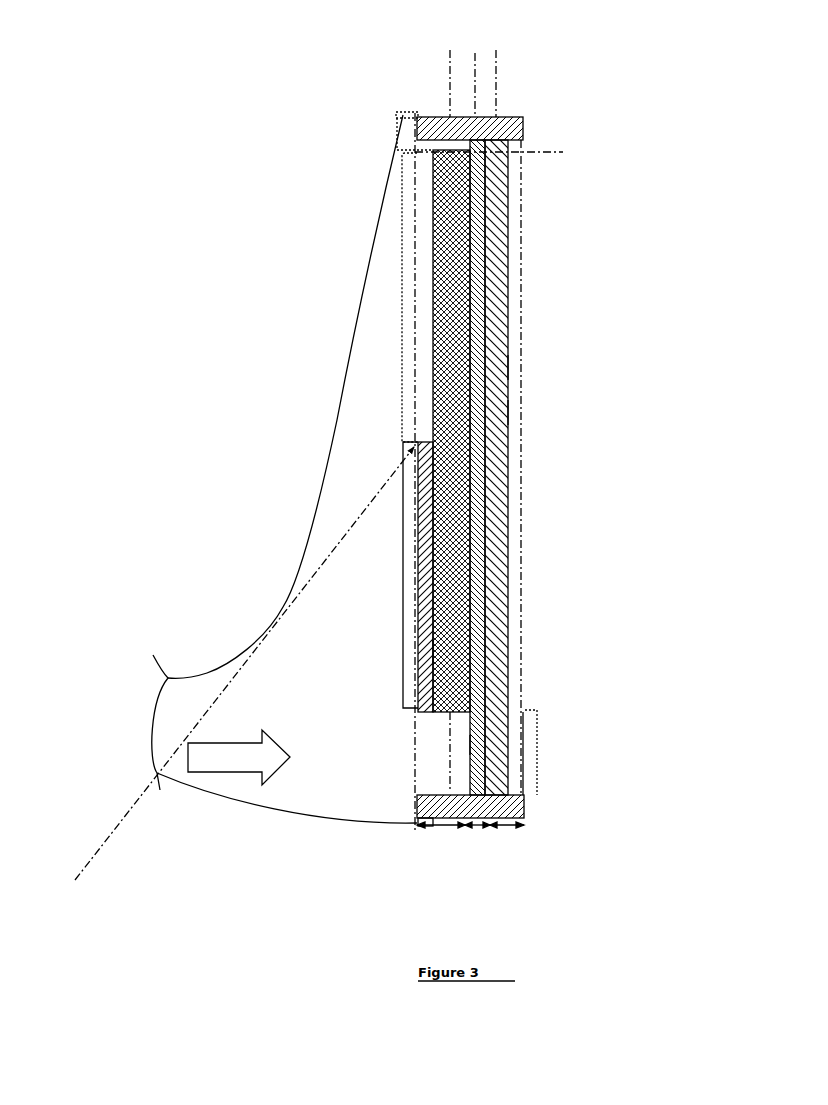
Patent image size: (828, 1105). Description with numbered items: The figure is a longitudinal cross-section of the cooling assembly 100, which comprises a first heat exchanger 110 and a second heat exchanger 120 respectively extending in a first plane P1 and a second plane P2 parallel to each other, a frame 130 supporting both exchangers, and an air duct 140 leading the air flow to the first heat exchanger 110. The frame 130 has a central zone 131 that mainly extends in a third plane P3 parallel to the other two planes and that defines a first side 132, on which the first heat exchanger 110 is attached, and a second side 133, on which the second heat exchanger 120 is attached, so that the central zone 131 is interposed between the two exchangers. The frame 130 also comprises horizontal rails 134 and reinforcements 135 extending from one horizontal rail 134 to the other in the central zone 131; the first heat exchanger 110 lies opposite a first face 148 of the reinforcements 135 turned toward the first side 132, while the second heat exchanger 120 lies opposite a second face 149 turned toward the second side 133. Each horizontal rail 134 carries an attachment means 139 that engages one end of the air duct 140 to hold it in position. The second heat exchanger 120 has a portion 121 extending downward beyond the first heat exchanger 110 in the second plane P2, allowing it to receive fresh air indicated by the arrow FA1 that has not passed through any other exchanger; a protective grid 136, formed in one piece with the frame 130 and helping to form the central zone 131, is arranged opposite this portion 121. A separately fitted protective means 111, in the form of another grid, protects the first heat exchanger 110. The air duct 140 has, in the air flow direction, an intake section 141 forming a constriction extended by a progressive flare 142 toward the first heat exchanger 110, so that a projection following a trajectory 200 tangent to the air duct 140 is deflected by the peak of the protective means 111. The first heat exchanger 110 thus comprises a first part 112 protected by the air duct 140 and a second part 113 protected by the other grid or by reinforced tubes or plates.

The cooling assembly 100 is at (577, 168).
The first heat exchanger 110 is at (433, 210).
The means for protecting the first heat exchanger 111 is at (418, 653).
The first part of the first heat exchanger 112 is at (402, 297).
The second part of the first heat exchanger 113 is at (403, 575).
The second heat exchanger 120 is at (508, 302).
The portion of the second heat exchanger 121 is at (537, 752).
The frame 130 is at (525, 135).
The central zone 131 is at (480, 830).
The first side 132 is at (442, 830).
The second side 133 is at (503, 830).
The horizontal rail 134 is at (432, 117).
The reinforcement 135 is at (508, 367).
The protective grid 136 is at (470, 745).
The attachment means 139 is at (418, 113).
The air duct 140 is at (222, 548).
The intake section 141 is at (170, 710).
The progressive flare 142 is at (318, 500).
The first face 148 is at (416, 150).
The second face 149 is at (508, 412).
The trajectory 200 is at (138, 803).
The first plane P1 is at (449, 60).
The second plane P2 is at (496, 77).
The third plane P3 is at (475, 57).
The force direction arrow FA1 is at (220, 772).